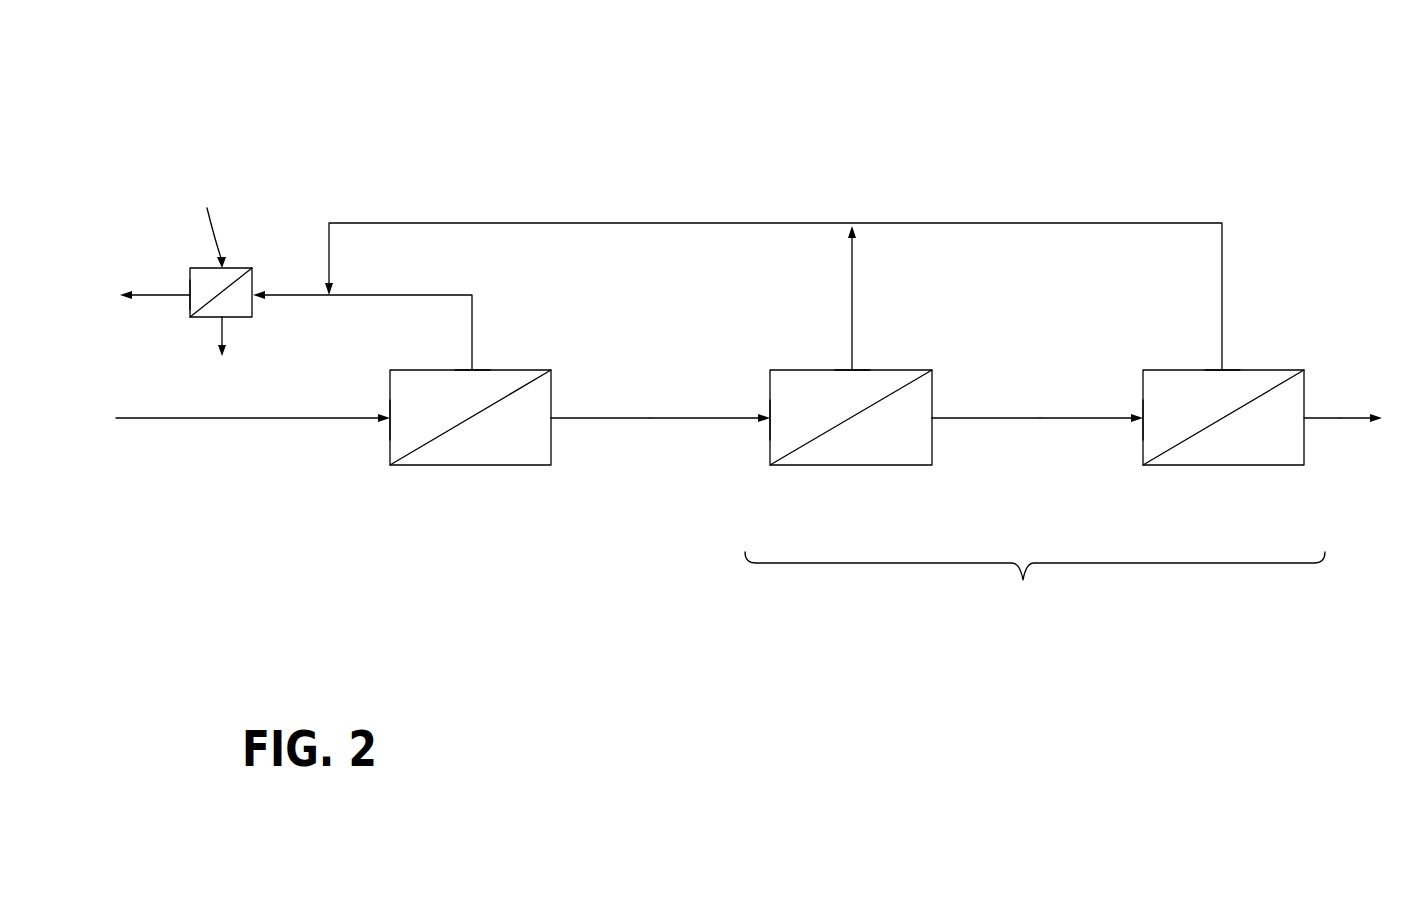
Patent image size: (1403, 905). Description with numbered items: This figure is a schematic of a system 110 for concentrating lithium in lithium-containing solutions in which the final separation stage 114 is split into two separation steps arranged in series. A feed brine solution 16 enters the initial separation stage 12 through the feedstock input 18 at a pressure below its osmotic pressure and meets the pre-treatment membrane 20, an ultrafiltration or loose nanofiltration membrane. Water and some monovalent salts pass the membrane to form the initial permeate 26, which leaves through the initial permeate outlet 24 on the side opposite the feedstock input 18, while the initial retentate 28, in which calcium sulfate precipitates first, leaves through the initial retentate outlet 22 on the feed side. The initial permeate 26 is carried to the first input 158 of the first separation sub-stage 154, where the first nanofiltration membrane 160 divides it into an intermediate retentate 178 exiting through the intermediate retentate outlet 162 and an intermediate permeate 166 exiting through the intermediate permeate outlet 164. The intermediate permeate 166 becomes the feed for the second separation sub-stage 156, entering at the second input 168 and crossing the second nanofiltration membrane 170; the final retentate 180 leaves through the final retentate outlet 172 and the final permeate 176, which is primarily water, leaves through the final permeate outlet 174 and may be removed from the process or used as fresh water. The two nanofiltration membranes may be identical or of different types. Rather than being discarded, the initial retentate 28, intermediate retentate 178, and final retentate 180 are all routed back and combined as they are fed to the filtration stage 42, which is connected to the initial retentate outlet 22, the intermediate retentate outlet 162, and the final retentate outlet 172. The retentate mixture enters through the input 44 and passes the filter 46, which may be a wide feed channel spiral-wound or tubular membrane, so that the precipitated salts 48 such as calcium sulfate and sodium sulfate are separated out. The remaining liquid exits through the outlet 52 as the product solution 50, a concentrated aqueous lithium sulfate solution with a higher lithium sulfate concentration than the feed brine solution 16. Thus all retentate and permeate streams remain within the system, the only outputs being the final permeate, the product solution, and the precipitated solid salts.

The system 110 is at (690, 104).
The initial separation stage 12 is at (457, 476).
The feed brine solution 16 is at (275, 418).
The feedstock input 18 is at (389, 420).
The pre-treatment membrane 20 is at (472, 417).
The initial retentate outlet 22 is at (472, 367).
The initial permeate outlet 24 is at (551, 418).
The initial permeate 26 is at (648, 418).
The initial retentate 28 is at (472, 322).
The filtration stage 42 is at (209, 224).
The input 44 is at (253, 290).
The filter 46 is at (222, 294).
The precipitated salts 48 is at (215, 329).
The product solution 50 is at (153, 293).
The outlet 52 is at (188, 295).
The final separation stage 114 is at (1035, 582).
The first separation sub-stage 154 is at (849, 476).
The second separation sub-stage 156 is at (1221, 476).
The first input 158 is at (770, 420).
The first nanofiltration membrane 160 is at (851, 418).
The intermediate retentate outlet 162 is at (852, 368).
The intermediate permeate outlet 164 is at (932, 418).
The intermediate permeate 166 is at (980, 418).
The second input 168 is at (1143, 418).
The second nanofiltration membrane 170 is at (1224, 418).
The final retentate outlet 172 is at (1222, 368).
The final permeate outlet 174 is at (1304, 410).
The final permeate 176 is at (1340, 418).
The intermediate retentate 178 is at (852, 292).
The final retentate 180 is at (1222, 272).